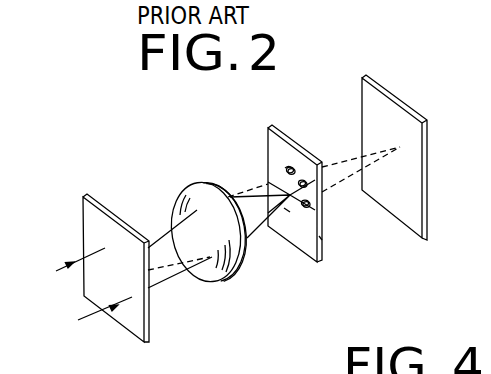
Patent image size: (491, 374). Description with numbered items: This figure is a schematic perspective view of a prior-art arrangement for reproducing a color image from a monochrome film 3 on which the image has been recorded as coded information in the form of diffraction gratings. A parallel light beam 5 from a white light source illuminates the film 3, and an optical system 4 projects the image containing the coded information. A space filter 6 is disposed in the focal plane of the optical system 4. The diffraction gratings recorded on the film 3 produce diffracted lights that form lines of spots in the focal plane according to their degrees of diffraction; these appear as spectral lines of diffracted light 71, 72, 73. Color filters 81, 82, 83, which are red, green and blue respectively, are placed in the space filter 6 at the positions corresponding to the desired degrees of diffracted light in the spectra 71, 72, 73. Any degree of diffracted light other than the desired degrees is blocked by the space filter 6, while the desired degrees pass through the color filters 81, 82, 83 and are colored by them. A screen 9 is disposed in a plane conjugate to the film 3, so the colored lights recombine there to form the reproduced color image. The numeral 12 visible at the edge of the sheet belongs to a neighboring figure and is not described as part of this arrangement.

The film 3 is at (133, 313).
The optical system 4 is at (218, 278).
The parallel light beam 5 is at (85, 319).
The space filter 6 is at (310, 263).
The spectral line of diffracted light 71 is at (287, 210).
The spectral line of diffracted light 72 is at (322, 240).
The spectral line of diffracted light 73 is at (287, 170).
The color filter 81 is at (306, 180).
The color filter 82 is at (292, 166).
The color filter 83 is at (309, 205).
The screen 9 is at (415, 218).
The element of adjacent figure 12 is at (384, 9).